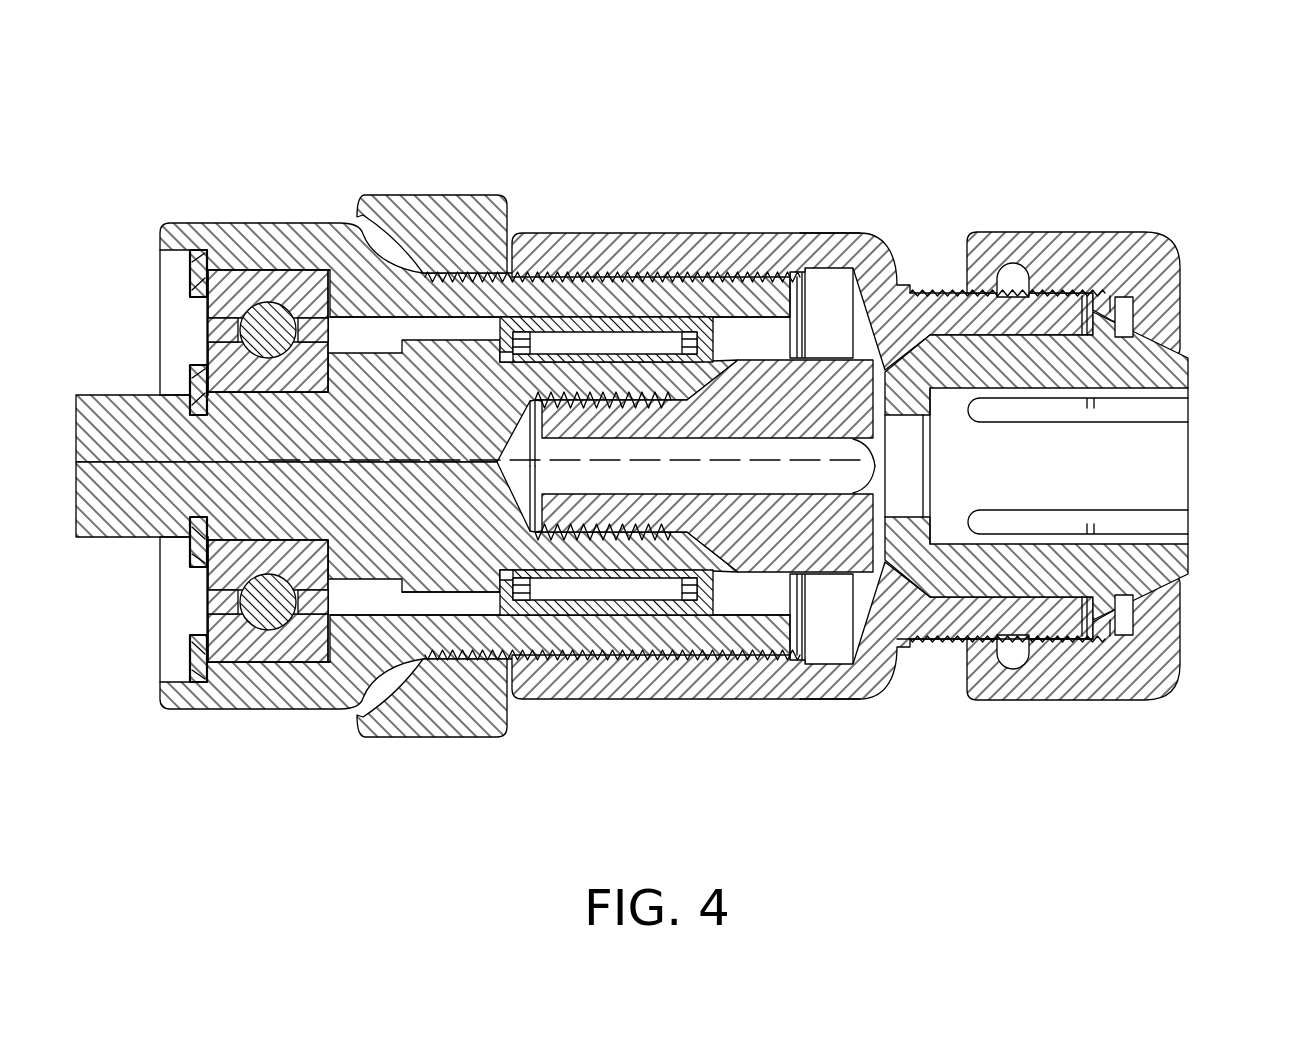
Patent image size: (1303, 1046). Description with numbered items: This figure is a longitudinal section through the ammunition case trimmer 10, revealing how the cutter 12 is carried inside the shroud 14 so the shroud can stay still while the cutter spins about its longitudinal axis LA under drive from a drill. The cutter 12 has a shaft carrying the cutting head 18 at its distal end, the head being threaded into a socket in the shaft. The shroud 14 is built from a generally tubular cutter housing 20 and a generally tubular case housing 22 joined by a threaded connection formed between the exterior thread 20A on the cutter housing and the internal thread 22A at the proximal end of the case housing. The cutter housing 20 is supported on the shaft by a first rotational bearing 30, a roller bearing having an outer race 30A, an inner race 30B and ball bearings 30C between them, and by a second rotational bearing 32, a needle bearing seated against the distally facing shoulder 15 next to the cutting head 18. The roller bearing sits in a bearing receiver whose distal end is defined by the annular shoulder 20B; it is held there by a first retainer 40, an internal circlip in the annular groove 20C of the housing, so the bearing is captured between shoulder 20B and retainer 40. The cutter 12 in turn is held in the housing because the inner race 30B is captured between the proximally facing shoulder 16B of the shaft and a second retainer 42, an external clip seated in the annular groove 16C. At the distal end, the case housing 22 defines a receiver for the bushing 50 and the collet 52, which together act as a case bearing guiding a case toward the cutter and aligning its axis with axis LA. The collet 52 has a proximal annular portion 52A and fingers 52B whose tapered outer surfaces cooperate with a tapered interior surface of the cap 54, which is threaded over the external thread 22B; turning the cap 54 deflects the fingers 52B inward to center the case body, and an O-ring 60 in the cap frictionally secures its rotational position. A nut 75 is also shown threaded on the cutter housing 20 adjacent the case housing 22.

The trimmer 10 is at (772, 90).
The cutter 12 is at (464, 604).
The shroud 14 is at (840, 203).
The distally facing shoulder 15 is at (513, 337).
The proximally facing shoulder 16B is at (333, 383).
The annular groove 16C is at (193, 403).
The cutting head 18 is at (780, 600).
The cutter housing 20 is at (334, 214).
The exterior thread 20A is at (602, 292).
The annular shoulder 20B is at (310, 262).
The annular groove 20C is at (194, 275).
The case housing 22 is at (739, 221).
The internal thread 22A is at (683, 290).
The external thread 22B is at (933, 287).
The first rotational bearing 30 is at (248, 268).
The outer race 30A is at (237, 290).
The inner race 30B is at (245, 377).
The ball bearings 30C is at (290, 375).
The second rotational bearing 32 is at (628, 318).
The first retainer 40 is at (194, 300).
The second retainer 42 is at (194, 385).
The bushing 50 is at (905, 648).
The collet 52 is at (1017, 596).
The proximal annular portion 52A is at (955, 597).
The fingers 52B is at (1117, 352).
The cap 54 is at (1066, 232).
The O-ring 60 is at (997, 263).
The lock nut 75 is at (462, 186).
The longitudinal axis LA is at (430, 462).